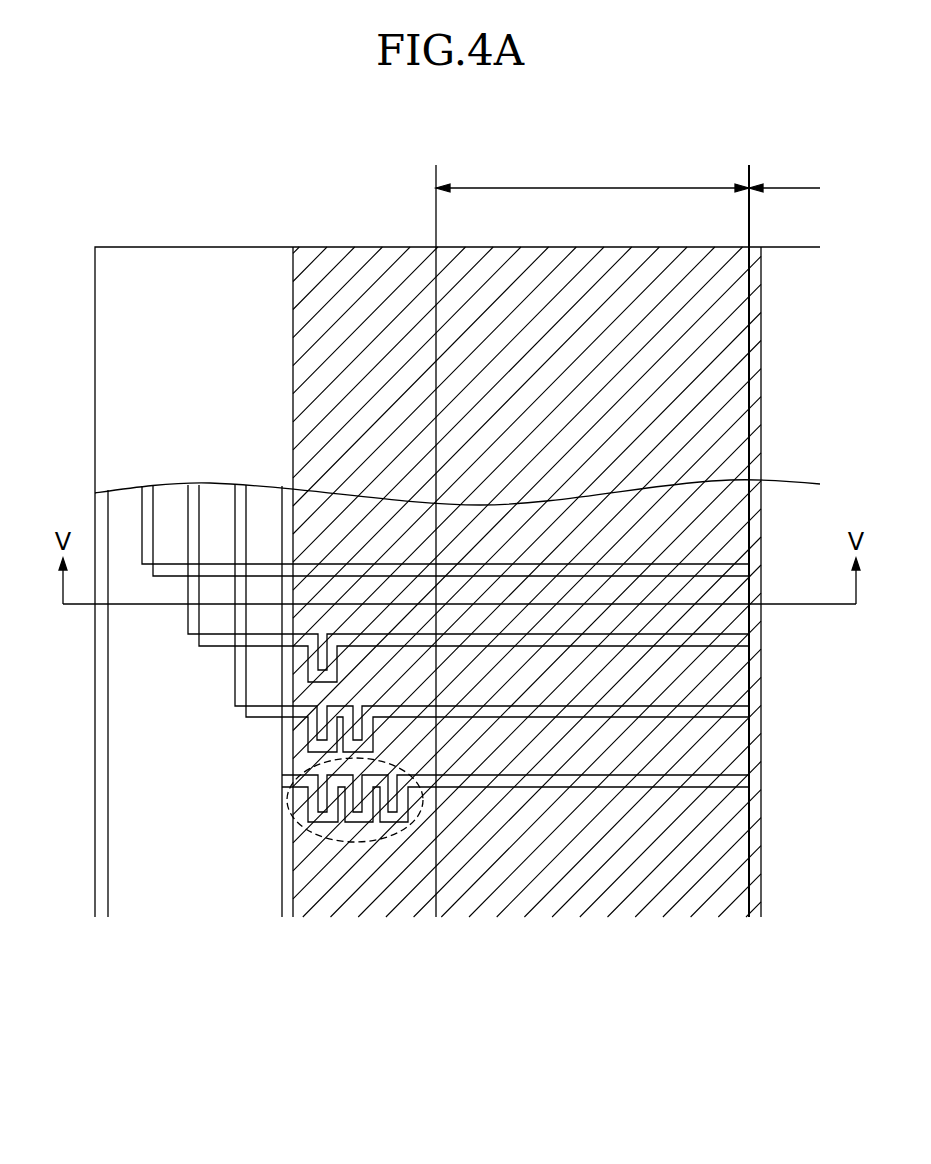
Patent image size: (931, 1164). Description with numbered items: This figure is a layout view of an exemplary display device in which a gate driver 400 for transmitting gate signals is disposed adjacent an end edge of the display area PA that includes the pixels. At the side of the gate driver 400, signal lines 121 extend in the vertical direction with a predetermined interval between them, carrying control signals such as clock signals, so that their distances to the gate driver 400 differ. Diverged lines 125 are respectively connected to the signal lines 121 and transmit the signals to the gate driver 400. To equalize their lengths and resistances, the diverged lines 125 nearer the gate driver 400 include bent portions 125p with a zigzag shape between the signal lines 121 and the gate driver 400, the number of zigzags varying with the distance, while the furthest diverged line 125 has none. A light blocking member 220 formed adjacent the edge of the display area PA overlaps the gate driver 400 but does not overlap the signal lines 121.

The light blocking member 220 is at (326, 283).
The gate driver 400 is at (592, 175).
The display area PA is at (784, 175).
The signal lines 121 is at (108, 680).
The diverged lines 125 is at (173, 563).
The bent portions 125p is at (352, 842).